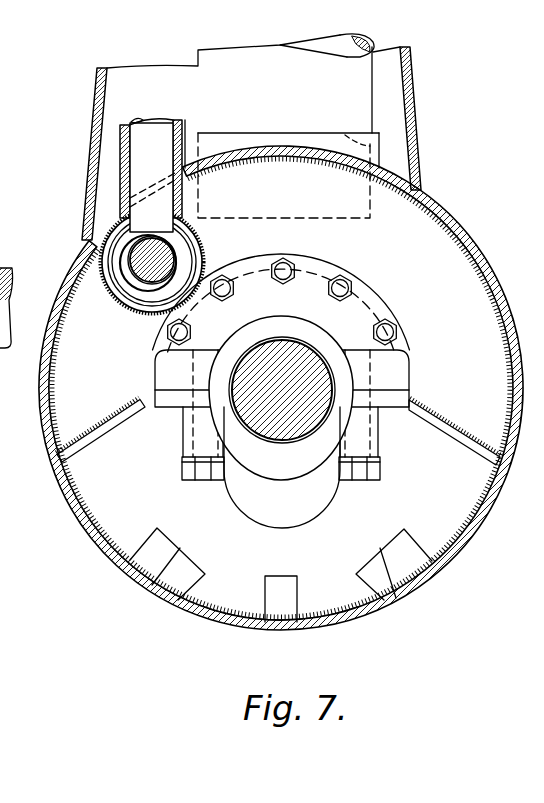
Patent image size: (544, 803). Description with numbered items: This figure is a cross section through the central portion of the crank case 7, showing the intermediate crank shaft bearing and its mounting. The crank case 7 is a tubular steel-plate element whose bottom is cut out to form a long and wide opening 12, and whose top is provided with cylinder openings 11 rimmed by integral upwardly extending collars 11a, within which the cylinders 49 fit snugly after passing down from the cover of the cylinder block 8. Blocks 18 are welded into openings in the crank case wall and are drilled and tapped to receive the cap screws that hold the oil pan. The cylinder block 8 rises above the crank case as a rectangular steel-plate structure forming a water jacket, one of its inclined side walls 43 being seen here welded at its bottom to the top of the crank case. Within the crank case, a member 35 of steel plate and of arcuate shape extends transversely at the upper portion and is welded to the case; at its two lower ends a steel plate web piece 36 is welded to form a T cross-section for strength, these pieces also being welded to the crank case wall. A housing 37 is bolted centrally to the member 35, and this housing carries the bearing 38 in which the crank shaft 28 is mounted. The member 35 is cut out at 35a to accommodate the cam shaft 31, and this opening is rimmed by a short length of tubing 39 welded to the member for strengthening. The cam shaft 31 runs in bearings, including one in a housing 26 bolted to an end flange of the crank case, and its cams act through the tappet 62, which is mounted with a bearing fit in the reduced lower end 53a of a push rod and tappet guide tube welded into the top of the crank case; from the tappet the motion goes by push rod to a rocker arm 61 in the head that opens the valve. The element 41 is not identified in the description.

The crank case 7 is at (456, 224).
The cylinder block 8 is at (424, 97).
The cylinder openings 11 is at (348, 137).
The collars 11a is at (303, 136).
The bottom opening 12 is at (247, 622).
The blocks 18 is at (168, 545).
The housing 26 is at (457, 427).
The crank shaft 28 is at (255, 412).
The cam shaft 31 is at (133, 264).
The arcuate member 35 is at (452, 270).
The cut-out 35a is at (197, 251).
The web piece 36 is at (97, 433).
The housing 37 is at (318, 343).
The bearing 38 is at (272, 440).
The tubing 39 is at (135, 306).
The left housing wall 41 is at (100, 112).
The side wall 43 is at (415, 125).
The cylinders 49 is at (267, 58).
The reduced lower end 53a is at (125, 155).
The rocker arm 61 is at (121, 259).
The tappet 62 is at (140, 178).